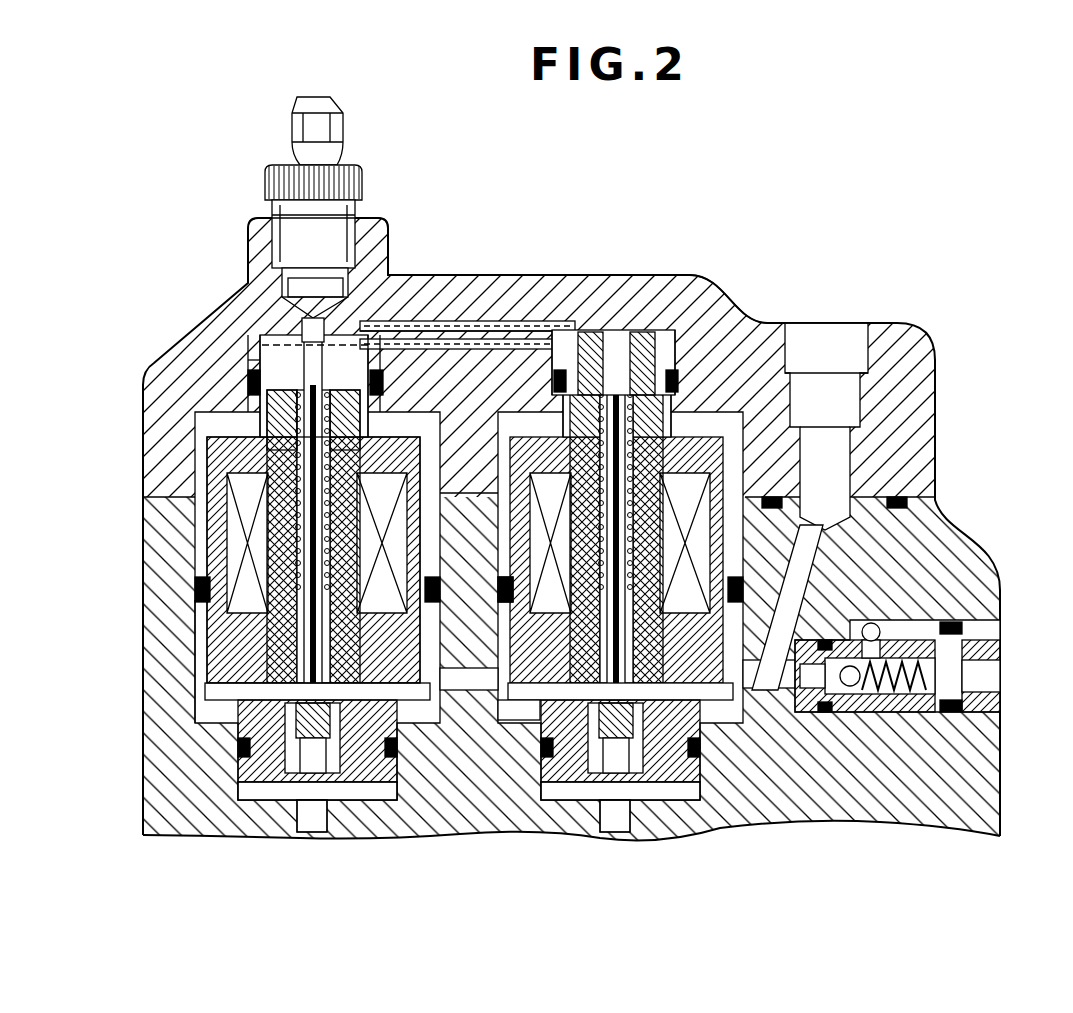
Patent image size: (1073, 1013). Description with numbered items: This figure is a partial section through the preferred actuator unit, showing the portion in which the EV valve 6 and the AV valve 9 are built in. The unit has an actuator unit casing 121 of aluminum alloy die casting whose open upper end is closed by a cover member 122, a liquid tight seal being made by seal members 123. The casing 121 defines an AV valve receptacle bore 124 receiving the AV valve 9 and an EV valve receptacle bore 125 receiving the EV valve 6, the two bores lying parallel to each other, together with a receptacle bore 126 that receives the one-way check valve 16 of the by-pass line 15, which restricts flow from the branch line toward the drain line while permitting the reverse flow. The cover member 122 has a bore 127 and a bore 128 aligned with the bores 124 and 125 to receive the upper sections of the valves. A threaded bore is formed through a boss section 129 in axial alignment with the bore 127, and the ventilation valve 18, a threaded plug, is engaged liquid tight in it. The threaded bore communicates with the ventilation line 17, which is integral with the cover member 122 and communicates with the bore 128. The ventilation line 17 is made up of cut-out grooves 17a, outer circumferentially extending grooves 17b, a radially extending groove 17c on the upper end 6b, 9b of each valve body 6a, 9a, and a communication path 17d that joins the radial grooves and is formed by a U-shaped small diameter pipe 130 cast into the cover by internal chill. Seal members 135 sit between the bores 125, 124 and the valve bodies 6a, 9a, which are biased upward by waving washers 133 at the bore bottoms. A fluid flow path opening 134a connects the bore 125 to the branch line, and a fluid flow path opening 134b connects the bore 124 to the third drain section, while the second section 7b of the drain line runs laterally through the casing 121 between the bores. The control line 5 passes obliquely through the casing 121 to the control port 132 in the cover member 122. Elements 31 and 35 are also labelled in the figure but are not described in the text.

The control line 5 is at (800, 552).
The EV valve 6 is at (494, 488).
The valve body 6a is at (800, 351).
The upper end 6b is at (657, 330).
The second section of drain line 7b is at (465, 685).
The AV valve 9 is at (200, 523).
The valve body 9a is at (227, 462).
The upper end 9b is at (300, 322).
The by-pass line 15 is at (775, 690).
The one-way check valve 16 is at (907, 742).
The ventilation line 17 is at (443, 315).
The cut-out grooves 17a is at (400, 277).
The outer circumferentially extending grooves 17b is at (247, 342).
The radially extending groove 17c is at (240, 407).
The communication path 17d is at (470, 337).
The ventilation valve 18 is at (305, 243).
The fitting body 31 is at (353, 232).
The seal 35 is at (497, 603).
The actuator unit casing 121 is at (980, 604).
The cover member 122 is at (603, 380).
The seal members 123 is at (937, 478).
The AV valve receptacle bore 124 is at (193, 627).
The EV valve receptacle bore 125 is at (522, 698).
The receptacle bore 126 is at (882, 626).
The bore 127 is at (247, 362).
The bore 128 is at (768, 322).
The boss section 129 is at (262, 247).
The small diameter pipe 130 is at (537, 323).
The control port 132 is at (862, 352).
The waving washers 133 is at (253, 795).
The fluid flow path opening 134a is at (615, 825).
The fluid flow path opening 134b is at (312, 828).
The seal members 135 is at (247, 383).